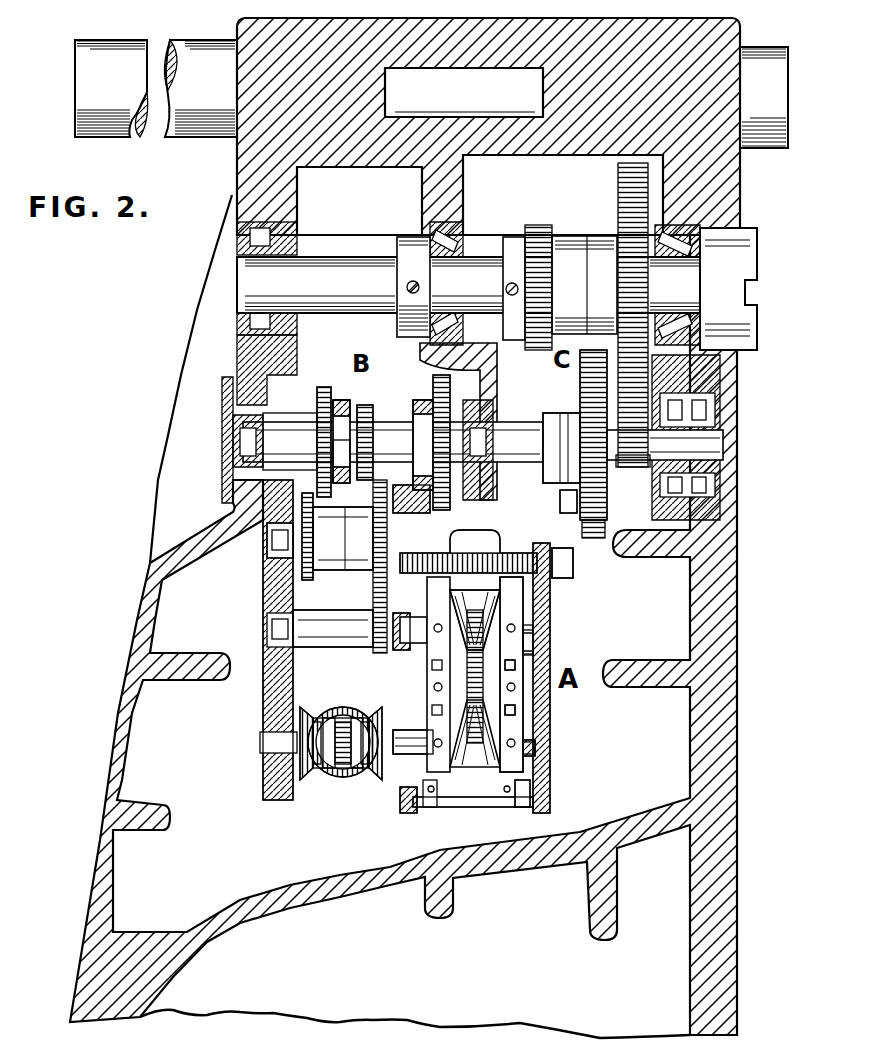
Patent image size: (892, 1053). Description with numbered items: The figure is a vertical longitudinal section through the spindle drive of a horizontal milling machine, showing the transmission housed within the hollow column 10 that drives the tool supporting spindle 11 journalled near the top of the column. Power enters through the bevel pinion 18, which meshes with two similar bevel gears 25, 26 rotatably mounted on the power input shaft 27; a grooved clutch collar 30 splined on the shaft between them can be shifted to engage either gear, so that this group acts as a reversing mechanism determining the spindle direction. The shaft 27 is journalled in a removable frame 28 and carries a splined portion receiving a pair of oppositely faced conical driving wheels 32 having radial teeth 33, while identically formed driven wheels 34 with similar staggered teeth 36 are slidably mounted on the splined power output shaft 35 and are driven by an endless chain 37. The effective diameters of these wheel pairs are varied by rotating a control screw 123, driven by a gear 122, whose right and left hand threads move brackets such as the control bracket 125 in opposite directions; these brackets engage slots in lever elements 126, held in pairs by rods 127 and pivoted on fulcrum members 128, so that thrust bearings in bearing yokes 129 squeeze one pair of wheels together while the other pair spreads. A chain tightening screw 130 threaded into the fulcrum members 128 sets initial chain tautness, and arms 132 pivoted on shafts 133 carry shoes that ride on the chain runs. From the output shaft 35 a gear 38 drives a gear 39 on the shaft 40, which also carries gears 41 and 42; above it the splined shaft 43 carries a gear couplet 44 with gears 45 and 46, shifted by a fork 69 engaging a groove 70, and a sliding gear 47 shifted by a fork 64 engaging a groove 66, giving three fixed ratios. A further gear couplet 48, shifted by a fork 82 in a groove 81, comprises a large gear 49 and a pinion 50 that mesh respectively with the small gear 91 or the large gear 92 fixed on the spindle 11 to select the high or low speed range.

The column 10 is at (162, 528).
The tool supporting spindle 11 is at (757, 236).
The bevel pinion 18 is at (338, 774).
The bevel gear 25 is at (297, 775).
The bevel gear 26 is at (380, 778).
The power input shaft 27 is at (417, 732).
The removable frame 28 is at (274, 707).
The clutch collar 30 is at (342, 720).
The conical driving wheels 32 is at (500, 778).
The radial teeth 33 is at (540, 748).
The driven wheels 34 is at (540, 548).
The power output shaft 35 is at (403, 642).
The staggered teeth 36 is at (505, 648).
The endless chain 37 is at (472, 605).
The gear 38 is at (373, 652).
The gear 39 is at (378, 530).
The shaft 40 is at (280, 535).
The gear 41 is at (310, 544).
The gear 42 is at (422, 510).
The splined shaft 43 is at (284, 422).
The gear couplet 44 is at (343, 401).
The gear 45 is at (324, 387).
The gear 46 is at (366, 407).
The sliding gear 47 is at (433, 381).
The gear couplet 48 is at (583, 412).
The large gear 49 is at (595, 540).
The pinion 50 is at (628, 470).
The shifting fork 64 is at (420, 412).
The groove 66 is at (427, 428).
The shifting fork 69 is at (338, 400).
The groove 70 is at (338, 450).
The groove 81 is at (572, 428).
The shifting fork 82 is at (562, 495).
The small gear 91 is at (532, 228).
The large gear 92 is at (620, 206).
The gear 122 is at (562, 580).
The control screw 123 is at (498, 554).
The control bracket 125 is at (443, 552).
The lever elements 126 is at (520, 604).
The rods 127 is at (533, 634).
The fulcrum member 128 is at (545, 690).
The bearing yokes 129 is at (532, 724).
The chain tightening screw 130 is at (533, 702).
The arms 132 is at (520, 810).
The shafts 133 is at (483, 802).